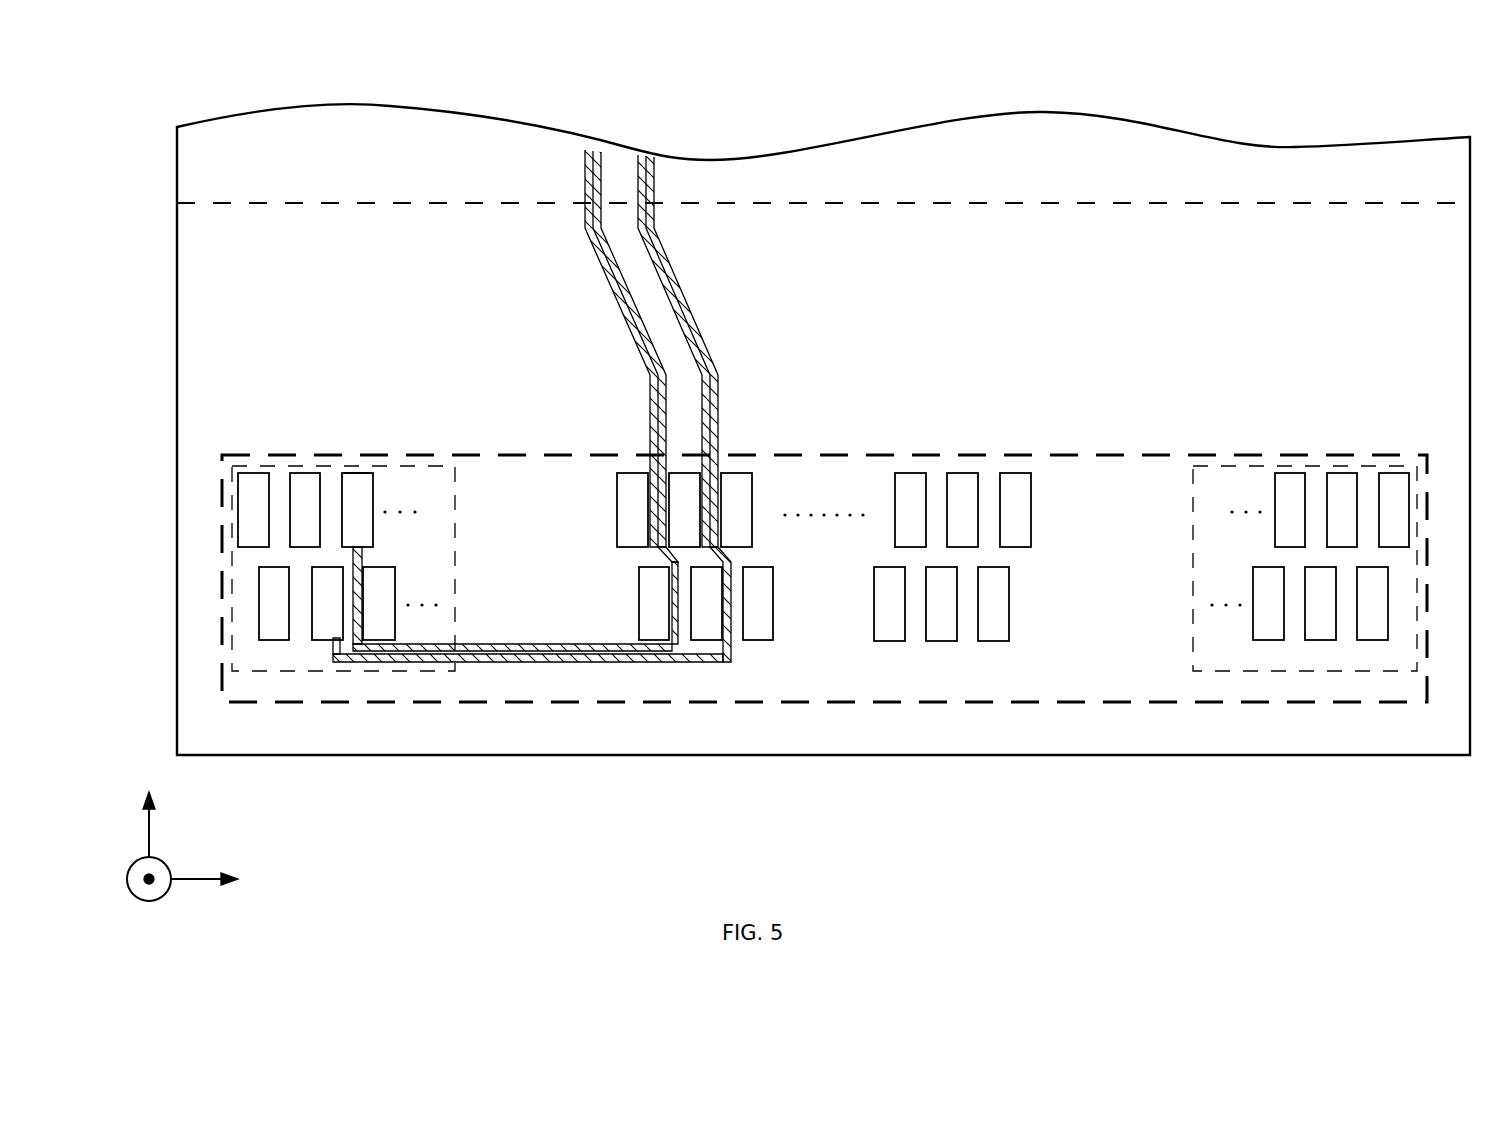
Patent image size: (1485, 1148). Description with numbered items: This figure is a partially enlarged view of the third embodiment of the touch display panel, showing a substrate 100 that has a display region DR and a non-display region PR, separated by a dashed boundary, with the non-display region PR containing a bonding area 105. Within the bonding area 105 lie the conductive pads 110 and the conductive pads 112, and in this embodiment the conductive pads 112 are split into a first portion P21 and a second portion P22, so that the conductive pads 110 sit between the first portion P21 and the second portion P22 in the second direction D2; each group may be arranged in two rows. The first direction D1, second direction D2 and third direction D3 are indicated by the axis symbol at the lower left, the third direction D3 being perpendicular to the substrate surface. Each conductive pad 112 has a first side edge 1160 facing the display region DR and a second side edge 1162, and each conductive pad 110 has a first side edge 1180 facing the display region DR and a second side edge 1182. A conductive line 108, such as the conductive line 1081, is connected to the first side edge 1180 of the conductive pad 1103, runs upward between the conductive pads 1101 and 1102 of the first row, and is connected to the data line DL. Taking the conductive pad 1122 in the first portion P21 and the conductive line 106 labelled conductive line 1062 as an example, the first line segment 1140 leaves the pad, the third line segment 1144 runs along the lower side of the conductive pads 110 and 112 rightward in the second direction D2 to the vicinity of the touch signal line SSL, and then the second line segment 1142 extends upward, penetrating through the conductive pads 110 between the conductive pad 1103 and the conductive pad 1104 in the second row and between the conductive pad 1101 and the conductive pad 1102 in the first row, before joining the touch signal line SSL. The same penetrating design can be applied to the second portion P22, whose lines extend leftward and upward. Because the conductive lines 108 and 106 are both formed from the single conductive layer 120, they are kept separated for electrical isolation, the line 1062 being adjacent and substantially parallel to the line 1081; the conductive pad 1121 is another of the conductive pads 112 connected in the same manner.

The substrate 100 is at (1380, 757).
The bonding area 105 is at (1243, 703).
The conductive line 106 is at (548, 645).
The conductive line 108 is at (590, 236).
The conductive line 1081 is at (740, 351).
The conductive pad 110 is at (638, 480).
The conductive pad 1101 is at (687, 480).
The conductive pad 1102 is at (740, 492).
The conductive pad 1103 is at (707, 640).
The conductive pad 1104 is at (757, 640).
The conductive pad 112 is at (257, 486).
The conductive pad 1121 is at (361, 503).
The conductive pad 1122 is at (322, 590).
The first line segment 1140 is at (336, 658).
The second line segment 1142 is at (674, 290).
The third line segment 1144 is at (500, 662).
The first side edge 1160 is at (356, 474).
The second side edge 1162 is at (357, 550).
The first side edge 1180 is at (717, 567).
The second side edge 1182 is at (730, 662).
The conductive layer 120 is at (598, 377).
The conductive line 1062 is at (427, 690).
The first portion P21 is at (415, 675).
The second portion P22 is at (1233, 462).
The data line DL is at (574, 325).
The touch signal line SSL is at (740, 325).
The display region DR is at (1066, 140).
The non-display region PR is at (1168, 220).
The first direction D1 is at (146, 813).
The second direction D2 is at (220, 881).
The third direction D3 is at (149, 896).